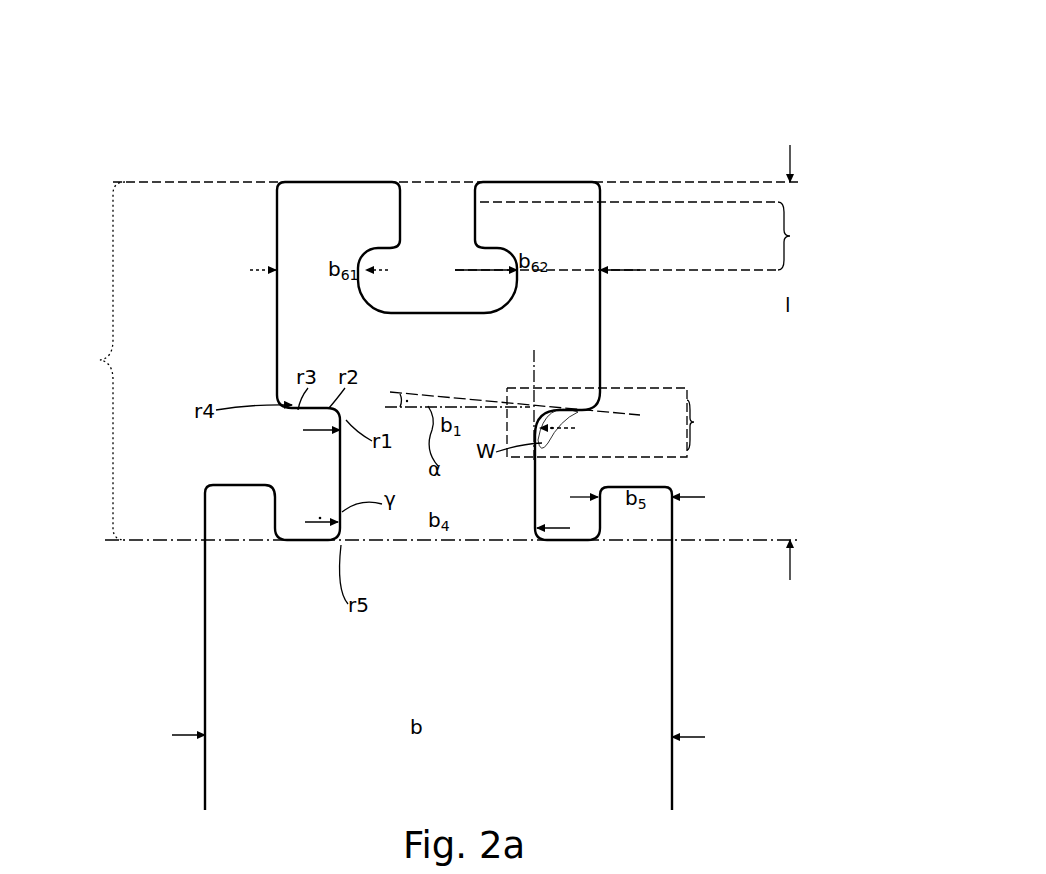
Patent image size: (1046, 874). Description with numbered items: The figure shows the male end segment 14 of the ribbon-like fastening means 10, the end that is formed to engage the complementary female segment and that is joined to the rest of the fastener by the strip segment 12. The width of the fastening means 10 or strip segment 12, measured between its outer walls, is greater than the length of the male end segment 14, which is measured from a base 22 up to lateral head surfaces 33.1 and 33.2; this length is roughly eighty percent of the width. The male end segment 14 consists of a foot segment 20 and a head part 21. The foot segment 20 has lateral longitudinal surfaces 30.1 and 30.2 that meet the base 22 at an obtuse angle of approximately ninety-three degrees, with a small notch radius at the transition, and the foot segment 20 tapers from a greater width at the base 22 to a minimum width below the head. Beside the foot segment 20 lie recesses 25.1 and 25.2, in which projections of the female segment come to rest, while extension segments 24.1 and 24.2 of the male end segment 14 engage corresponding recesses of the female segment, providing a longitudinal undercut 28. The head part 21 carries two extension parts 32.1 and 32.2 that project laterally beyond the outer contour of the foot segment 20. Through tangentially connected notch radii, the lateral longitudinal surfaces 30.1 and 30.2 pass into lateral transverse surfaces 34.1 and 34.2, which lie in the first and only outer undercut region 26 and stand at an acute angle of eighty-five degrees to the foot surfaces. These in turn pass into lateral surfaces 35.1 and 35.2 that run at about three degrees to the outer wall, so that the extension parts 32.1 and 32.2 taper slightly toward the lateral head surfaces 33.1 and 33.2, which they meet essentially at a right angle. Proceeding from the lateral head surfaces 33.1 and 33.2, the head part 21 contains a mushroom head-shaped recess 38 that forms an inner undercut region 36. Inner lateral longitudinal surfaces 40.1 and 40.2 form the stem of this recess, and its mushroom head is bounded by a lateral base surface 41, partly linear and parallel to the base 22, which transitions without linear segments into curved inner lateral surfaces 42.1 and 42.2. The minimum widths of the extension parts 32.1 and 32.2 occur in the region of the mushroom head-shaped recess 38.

The fastening means 10 is at (694, 80).
The strip segment 12 is at (215, 762).
The male end segment 14 is at (97, 361).
The foot segment 20 is at (248, 472).
The head part 21 is at (275, 282).
The base 22 is at (570, 544).
The extension segment 24.1 is at (232, 543).
The extension segment 24.2 is at (660, 542).
The recess 25.1 is at (305, 544).
The recess 25.2 is at (548, 524).
The outer undercut region 26 is at (616, 422).
The longitudinal undercut 28 is at (598, 520).
The lateral longitudinal surface 30.1 is at (338, 468).
The lateral longitudinal surface 30.2 is at (538, 493).
The extension part 32.1 is at (343, 358).
The extension part 32.2 is at (596, 368).
The lateral head surface 33.1 is at (333, 182).
The lateral head surface 33.2 is at (540, 182).
The lateral transverse surface 34.1 is at (294, 416).
The lateral transverse surface 34.2 is at (578, 412).
The lateral surface 35.1 is at (275, 255).
The lateral surface 35.2 is at (602, 302).
The inner undercut region 36 is at (636, 236).
The mushroom head-shaped recess 38 is at (446, 299).
The inner lateral longitudinal surface 40.1 is at (401, 195).
The inner lateral longitudinal surface 40.2 is at (474, 195).
The lateral base surface 41 is at (458, 308).
The curved inner lateral surface 42.1 is at (376, 290).
The curved inner lateral surface 42.2 is at (500, 292).